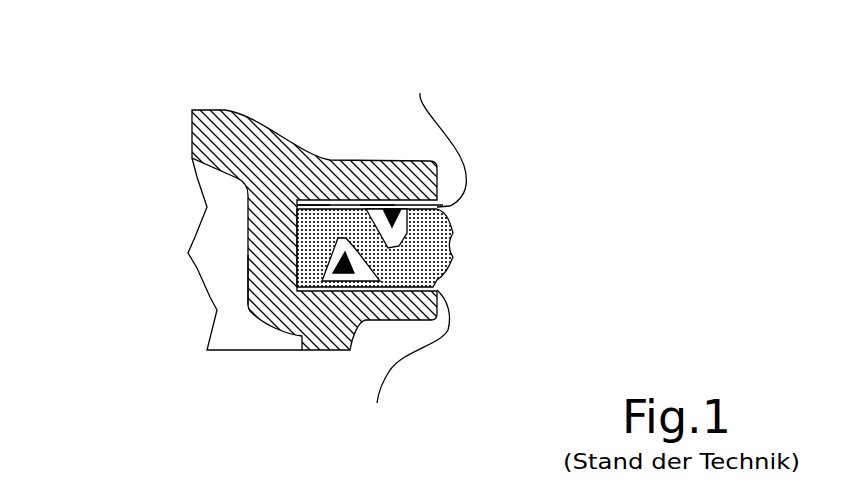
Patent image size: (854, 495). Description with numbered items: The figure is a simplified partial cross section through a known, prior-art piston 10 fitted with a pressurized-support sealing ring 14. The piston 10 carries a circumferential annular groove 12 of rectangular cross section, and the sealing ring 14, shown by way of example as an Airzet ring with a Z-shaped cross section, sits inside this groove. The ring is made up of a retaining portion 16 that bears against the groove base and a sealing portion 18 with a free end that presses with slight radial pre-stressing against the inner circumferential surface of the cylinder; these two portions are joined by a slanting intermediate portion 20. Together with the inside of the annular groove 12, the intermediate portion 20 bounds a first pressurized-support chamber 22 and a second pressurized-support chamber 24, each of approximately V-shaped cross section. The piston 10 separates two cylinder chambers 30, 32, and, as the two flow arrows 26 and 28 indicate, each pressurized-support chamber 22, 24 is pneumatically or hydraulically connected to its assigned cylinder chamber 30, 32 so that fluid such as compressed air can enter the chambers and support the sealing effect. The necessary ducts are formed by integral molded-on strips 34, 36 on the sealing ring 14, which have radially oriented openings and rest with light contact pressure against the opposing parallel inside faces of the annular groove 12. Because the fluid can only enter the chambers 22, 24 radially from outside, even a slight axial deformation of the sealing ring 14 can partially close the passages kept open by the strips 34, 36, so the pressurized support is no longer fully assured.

The piston 10 is at (259, 124).
The annular groove 12 is at (247, 243).
The sealing ring 14 is at (447, 210).
The retaining portion 16 is at (247, 288).
The sealing portion 18 is at (445, 263).
The intermediate portion 20 is at (374, 204).
The first pressurized-support chamber 22 is at (394, 232).
The second pressurized-support chamber 24 is at (333, 269).
The flow arrow 26 is at (424, 103).
The flow arrow 28 is at (452, 323).
The cylinder chamber 30 is at (190, 95).
The cylinder chamber 32 is at (207, 384).
The molded-on strip 34 is at (297, 204).
The molded-on strip 36 is at (344, 276).